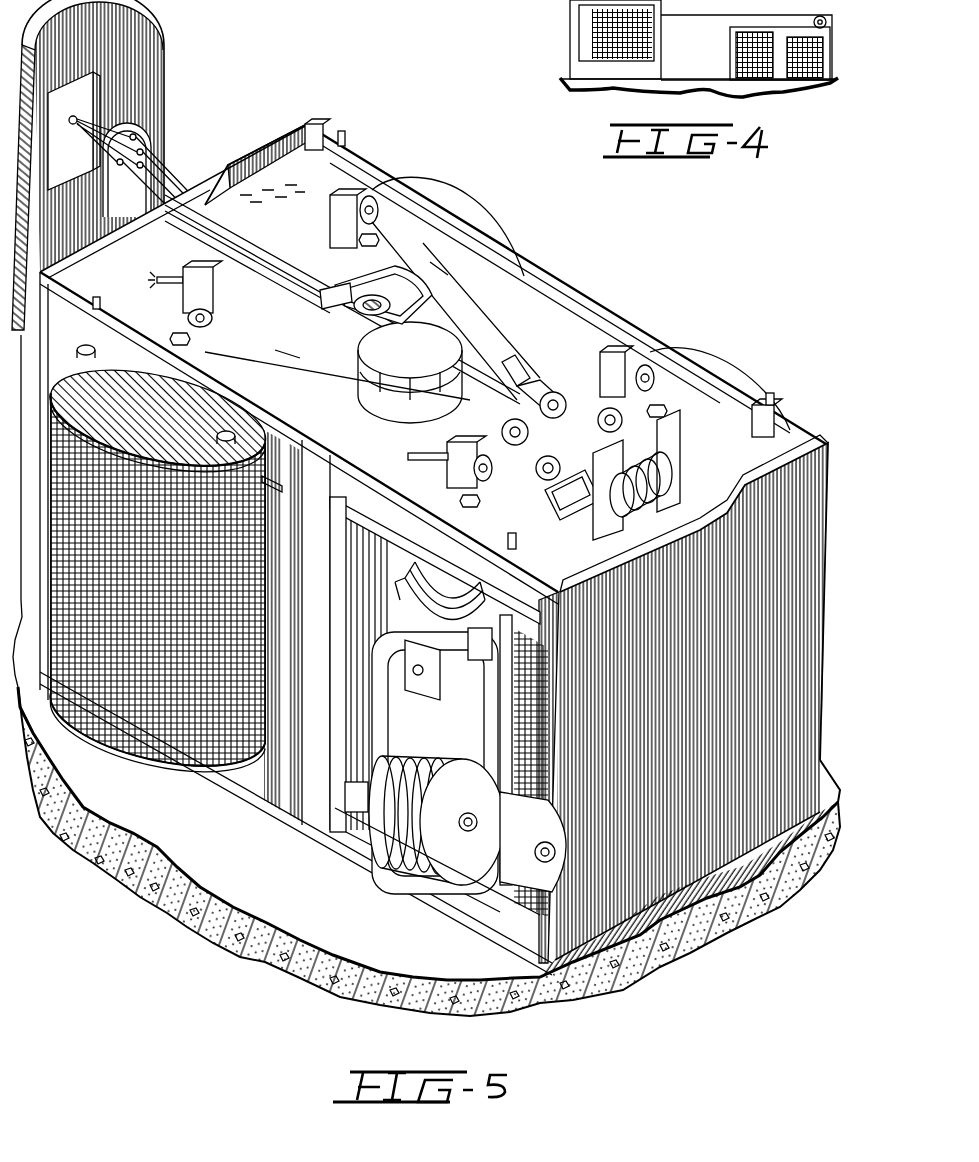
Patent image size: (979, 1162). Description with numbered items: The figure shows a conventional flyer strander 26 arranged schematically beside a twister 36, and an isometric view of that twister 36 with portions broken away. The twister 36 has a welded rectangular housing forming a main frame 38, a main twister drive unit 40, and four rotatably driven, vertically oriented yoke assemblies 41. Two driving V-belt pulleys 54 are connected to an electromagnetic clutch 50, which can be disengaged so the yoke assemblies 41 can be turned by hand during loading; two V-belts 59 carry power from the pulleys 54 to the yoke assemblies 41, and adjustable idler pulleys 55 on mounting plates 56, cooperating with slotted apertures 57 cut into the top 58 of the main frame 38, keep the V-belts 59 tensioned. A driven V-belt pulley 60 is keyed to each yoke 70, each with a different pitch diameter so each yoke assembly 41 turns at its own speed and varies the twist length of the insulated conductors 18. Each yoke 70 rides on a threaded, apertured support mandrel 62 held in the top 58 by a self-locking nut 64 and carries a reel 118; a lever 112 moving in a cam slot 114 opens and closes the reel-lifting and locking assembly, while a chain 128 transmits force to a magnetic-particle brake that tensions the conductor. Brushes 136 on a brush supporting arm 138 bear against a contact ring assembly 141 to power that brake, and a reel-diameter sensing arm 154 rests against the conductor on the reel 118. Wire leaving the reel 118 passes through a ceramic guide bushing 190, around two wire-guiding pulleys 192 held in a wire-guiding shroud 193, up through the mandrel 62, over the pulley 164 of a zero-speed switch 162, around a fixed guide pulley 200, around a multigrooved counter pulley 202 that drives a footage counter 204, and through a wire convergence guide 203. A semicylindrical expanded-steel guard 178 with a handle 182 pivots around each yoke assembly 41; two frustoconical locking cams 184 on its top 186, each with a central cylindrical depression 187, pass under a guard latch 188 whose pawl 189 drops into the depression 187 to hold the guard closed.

In FIG. 4, the flyer strander 26 is at (566, 22).
In FIG. 5, the flyer strander 26 is at (170, 50).
In FIG. 4, the insulated conductor 18 is at (720, 18).
In FIG. 5, the insulated conductor 18 is at (195, 174).
In FIG. 4, the twister 36 is at (727, 58).
In FIG. 5, the twister 36 is at (600, 283).
In FIG. 5, the main frame 38 is at (522, 249).
In FIG. 5, the main twister drive unit 40 is at (355, 400).
In FIG. 5, the yoke assembly 41 is at (350, 820).
In FIG. 5, the electromagnetic clutch 50 is at (445, 318).
In FIG. 5, the driving V-belt pulley 54 is at (348, 365).
In FIG. 5, the adjustable idler pulley 55 is at (378, 278).
In FIG. 5, the mounting plate 56 is at (525, 352).
In FIG. 5, the slotted aperture 57 is at (322, 292).
In FIG. 5, the top of the main frame 58 is at (540, 280).
In FIG. 5, the V-belt 59 is at (390, 408).
In FIG. 5, the driven V-belt pulley 60 is at (388, 540).
In FIG. 5, the support mandrel 62 is at (372, 222).
In FIG. 5, the self-locking nut 64 is at (432, 264).
In FIG. 5, the yoke 70 is at (545, 845).
In FIG. 5, the lever 112 is at (340, 795).
In FIG. 5, the cam slot 114 is at (320, 740).
In FIG. 5, the reel 118 is at (428, 870).
In FIG. 5, the chain 128 is at (470, 826).
In FIG. 5, the brush 136 is at (398, 584).
In FIG. 5, the brush supporting arm 138 is at (330, 548).
In FIG. 5, the contact ring assembly 141 is at (468, 640).
In FIG. 5, the reel-diameter sensing arm 154 is at (420, 790).
In FIG. 5, the zero-speed switch 162 is at (332, 215).
In FIG. 5, the pulley 164 is at (375, 198).
In FIG. 5, the guard 178 is at (460, 190).
In FIG. 5, the handle 182 is at (270, 482).
In FIG. 5, the locking cam 184 is at (88, 368).
In FIG. 5, the top of the guard 186 is at (110, 450).
In FIG. 5, the cylindrical depression 187 is at (92, 353).
In FIG. 5, the guard latch 188 is at (316, 123).
In FIG. 5, the pawl 189 is at (346, 131).
In FIG. 5, the ceramic guide bushing 190 is at (350, 815).
In FIG. 5, the wire-guiding pulley 192 is at (455, 726).
In FIG. 5, the wire-guiding shroud 193 is at (400, 652).
In FIG. 5, the fixed guide pulley 200 is at (604, 408).
In FIG. 5, the multigrooved counter pulley 202 is at (685, 487).
In FIG. 5, the wire convergence guide 203 is at (100, 105).
In FIG. 5, the footage counter 204 is at (540, 482).